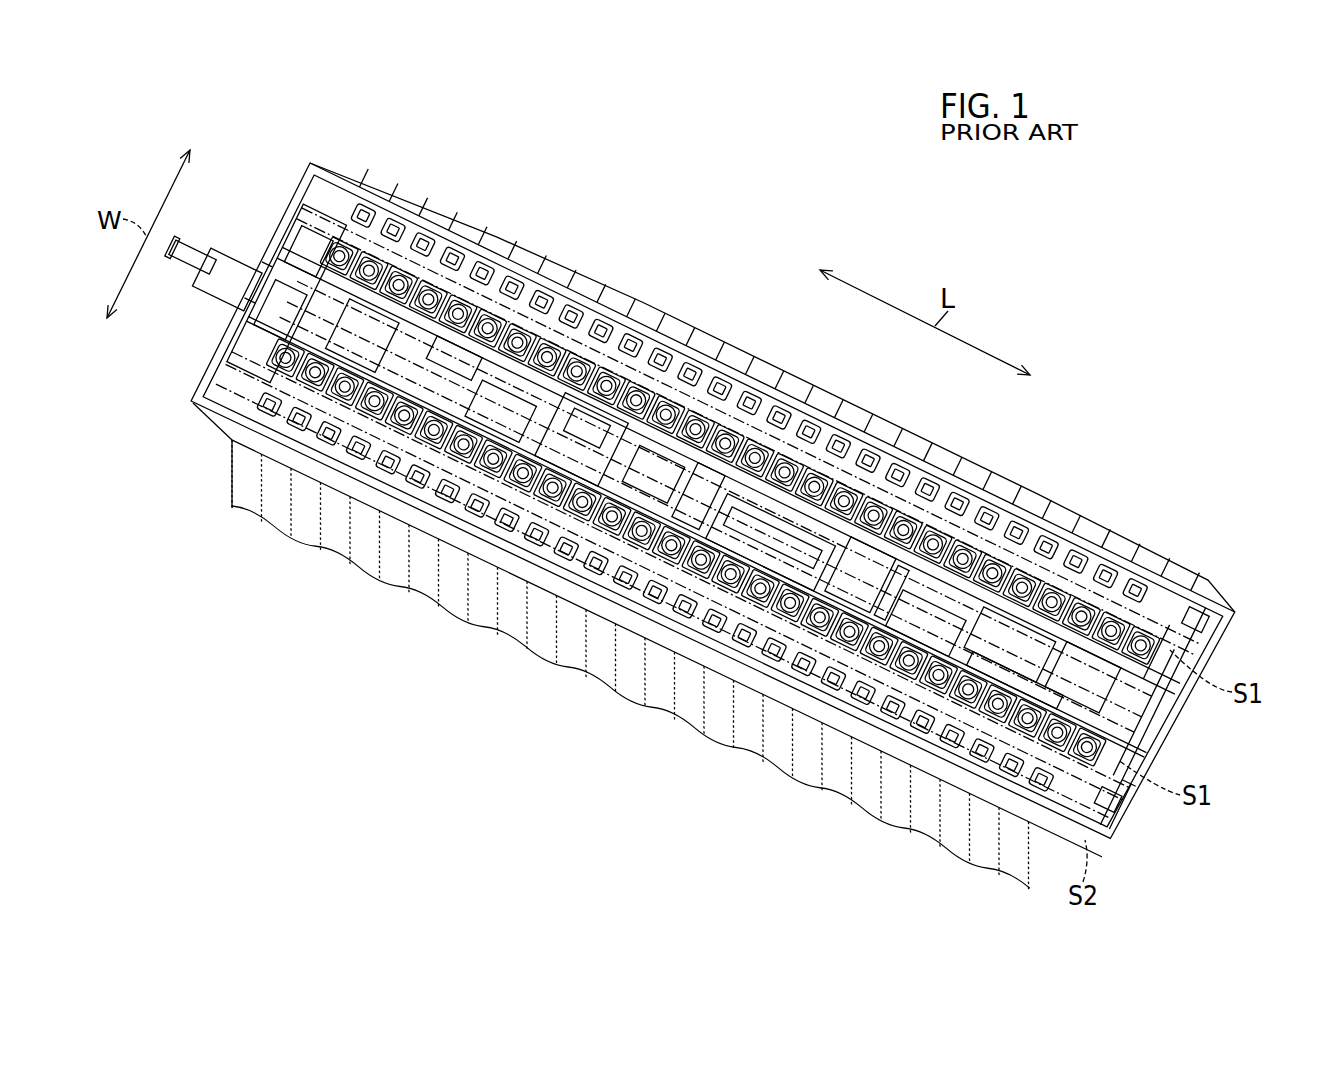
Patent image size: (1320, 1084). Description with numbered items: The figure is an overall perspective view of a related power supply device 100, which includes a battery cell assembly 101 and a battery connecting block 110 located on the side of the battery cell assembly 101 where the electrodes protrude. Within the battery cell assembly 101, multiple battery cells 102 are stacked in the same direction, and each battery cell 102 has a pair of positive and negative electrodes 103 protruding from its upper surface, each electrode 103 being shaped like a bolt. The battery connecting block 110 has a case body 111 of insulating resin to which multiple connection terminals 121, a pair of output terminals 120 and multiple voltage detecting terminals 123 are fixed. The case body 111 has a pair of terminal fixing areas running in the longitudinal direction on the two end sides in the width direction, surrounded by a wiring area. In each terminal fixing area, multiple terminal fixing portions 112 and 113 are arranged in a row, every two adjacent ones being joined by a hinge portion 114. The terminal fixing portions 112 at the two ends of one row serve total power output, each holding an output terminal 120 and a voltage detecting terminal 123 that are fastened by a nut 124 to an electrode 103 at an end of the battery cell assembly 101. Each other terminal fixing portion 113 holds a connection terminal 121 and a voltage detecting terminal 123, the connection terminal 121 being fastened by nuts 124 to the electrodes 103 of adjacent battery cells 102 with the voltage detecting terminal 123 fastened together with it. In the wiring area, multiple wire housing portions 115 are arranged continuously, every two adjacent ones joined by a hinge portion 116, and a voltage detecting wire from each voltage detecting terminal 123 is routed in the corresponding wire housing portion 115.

The power supply device 100 is at (772, 255).
The battery cell assembly 101 is at (230, 468).
The battery cell 102 is at (247, 510).
The electrode 103 is at (318, 180).
The battery connecting block 110 is at (1117, 842).
The case body 111 is at (1230, 613).
The terminal fixing portion 112 is at (308, 275).
The terminal fixing portion 113 is at (560, 305).
The hinge portion 114 is at (620, 345).
The wire housing portion 115 is at (470, 262).
The hinge portion 116 is at (600, 330).
The output terminal 120 is at (320, 250).
The connection terminal 121 is at (400, 270).
The voltage detecting terminal 123 is at (520, 295).
The nut 124 is at (340, 255).